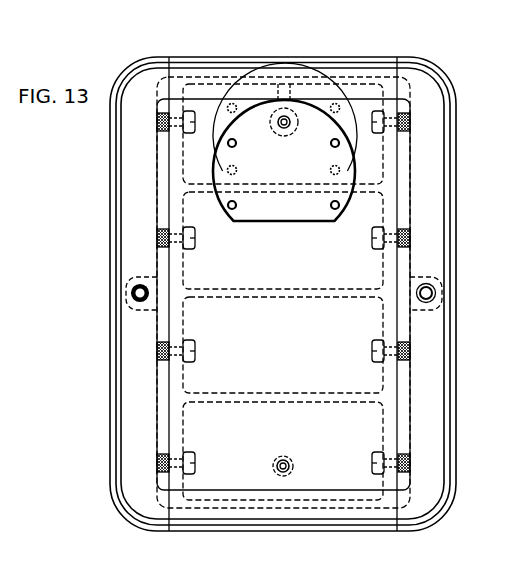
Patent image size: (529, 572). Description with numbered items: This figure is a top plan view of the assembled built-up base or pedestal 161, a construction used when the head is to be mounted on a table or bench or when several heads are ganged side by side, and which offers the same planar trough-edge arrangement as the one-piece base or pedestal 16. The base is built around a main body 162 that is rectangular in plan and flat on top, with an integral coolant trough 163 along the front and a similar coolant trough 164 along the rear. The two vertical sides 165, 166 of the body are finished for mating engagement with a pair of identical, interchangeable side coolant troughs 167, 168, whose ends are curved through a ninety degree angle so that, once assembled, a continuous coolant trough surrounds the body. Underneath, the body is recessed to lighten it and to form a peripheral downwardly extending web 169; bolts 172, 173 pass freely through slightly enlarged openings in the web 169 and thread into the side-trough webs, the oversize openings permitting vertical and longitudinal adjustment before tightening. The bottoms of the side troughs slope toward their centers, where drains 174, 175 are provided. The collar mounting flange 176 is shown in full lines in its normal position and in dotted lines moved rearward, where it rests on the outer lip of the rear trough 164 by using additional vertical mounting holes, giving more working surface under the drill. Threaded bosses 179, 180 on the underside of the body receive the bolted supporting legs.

The base or pedestal 16 is at (517, 142).
The built-up base or pedestal 161 is at (458, 215).
The main body 162 is at (372, 420).
The coolant trough 163 is at (354, 513).
The coolant trough 164 is at (358, 90).
The side 165 is at (157, 333).
The side 166 is at (398, 334).
The side coolant trough 167 is at (110, 198).
The side coolant trough 168 is at (457, 247).
The peripheral downwardly extending web 169 is at (178, 377).
The bolt 172 is at (372, 458).
The bolt 173 is at (372, 352).
The drain 174 is at (133, 289).
The drain 175 is at (438, 287).
The collar mounting flange 176 is at (281, 220).
The threaded boss 179 is at (291, 455).
The threaded boss 180 is at (292, 131).